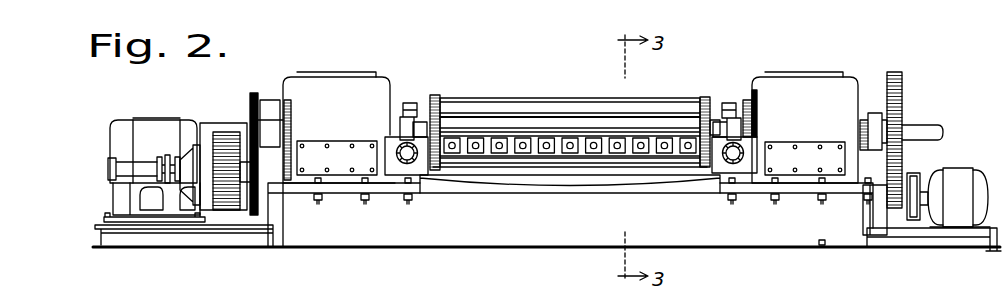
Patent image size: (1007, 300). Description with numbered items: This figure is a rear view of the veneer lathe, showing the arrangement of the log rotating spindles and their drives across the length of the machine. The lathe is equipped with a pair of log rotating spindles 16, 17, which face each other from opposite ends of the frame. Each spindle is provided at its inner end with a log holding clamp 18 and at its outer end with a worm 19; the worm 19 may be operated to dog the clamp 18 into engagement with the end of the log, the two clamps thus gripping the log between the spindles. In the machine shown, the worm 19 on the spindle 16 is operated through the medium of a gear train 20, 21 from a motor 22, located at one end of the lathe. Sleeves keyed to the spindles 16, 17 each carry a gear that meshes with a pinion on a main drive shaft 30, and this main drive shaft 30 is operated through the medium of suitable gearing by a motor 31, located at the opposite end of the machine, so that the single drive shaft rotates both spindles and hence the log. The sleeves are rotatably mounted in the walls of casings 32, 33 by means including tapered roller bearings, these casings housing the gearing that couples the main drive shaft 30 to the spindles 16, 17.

The log rotating spindle 16 is at (720, 123).
The log rotating spindle 17 is at (410, 130).
The log holding clamp 18 is at (440, 120).
The worm 19 is at (207, 128).
The gear train 20 is at (902, 100).
The gear train 21 is at (908, 193).
The motor 22 is at (957, 177).
The main drive shaft 30 is at (270, 175).
The motor 31 is at (147, 128).
The casing 32 is at (843, 85).
The casing 33 is at (375, 95).